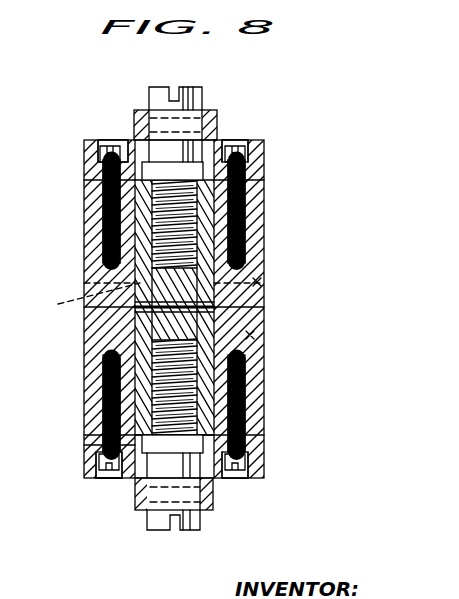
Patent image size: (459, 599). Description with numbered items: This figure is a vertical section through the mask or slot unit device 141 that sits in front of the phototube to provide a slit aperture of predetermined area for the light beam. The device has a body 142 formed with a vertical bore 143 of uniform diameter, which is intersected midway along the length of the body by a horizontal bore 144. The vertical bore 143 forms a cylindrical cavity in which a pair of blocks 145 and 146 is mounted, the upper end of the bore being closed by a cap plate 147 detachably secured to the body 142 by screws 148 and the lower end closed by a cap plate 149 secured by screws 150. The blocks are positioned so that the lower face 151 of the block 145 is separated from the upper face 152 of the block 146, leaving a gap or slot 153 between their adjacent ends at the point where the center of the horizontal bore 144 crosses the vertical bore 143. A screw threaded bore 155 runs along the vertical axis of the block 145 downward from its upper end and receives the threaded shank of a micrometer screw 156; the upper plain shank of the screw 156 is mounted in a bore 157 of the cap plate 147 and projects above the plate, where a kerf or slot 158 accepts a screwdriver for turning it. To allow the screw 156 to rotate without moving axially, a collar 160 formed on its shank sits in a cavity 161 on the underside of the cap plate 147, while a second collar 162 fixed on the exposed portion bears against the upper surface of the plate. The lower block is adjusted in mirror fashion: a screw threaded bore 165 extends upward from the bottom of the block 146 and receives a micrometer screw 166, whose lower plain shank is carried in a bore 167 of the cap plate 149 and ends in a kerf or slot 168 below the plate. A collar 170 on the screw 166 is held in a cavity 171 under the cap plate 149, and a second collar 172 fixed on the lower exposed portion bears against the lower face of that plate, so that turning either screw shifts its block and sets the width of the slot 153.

The mask or slot unit device 141 is at (62, 232).
The body 142 is at (248, 256).
The vertical bore 143 is at (107, 341).
The horizontal bore 144 is at (78, 301).
The block 145 is at (257, 272).
The block 146 is at (250, 337).
The cap plate 147 is at (268, 152).
The screws 148 is at (84, 193).
The cap plate 149 is at (84, 454).
The screws 150 is at (84, 403).
The lower face 151 is at (240, 302).
The upper face 152 is at (235, 318).
The gap or slot 153 is at (110, 312).
The screw threaded bore 155 is at (205, 264).
The micrometer screw 156 is at (182, 214).
The bore 157 is at (218, 146).
The kerf or slot 158 is at (178, 87).
The collar 160 is at (158, 162).
The cavity 161 is at (84, 165).
The second collar 162 is at (138, 110).
The screw threaded bore 165 is at (200, 350).
The micrometer screw 166 is at (178, 378).
The bore 167 is at (125, 479).
The kerf or slot 168 is at (172, 534).
The collar 170 is at (253, 445).
The cavity 171 is at (84, 447).
The second collar 172 is at (213, 512).